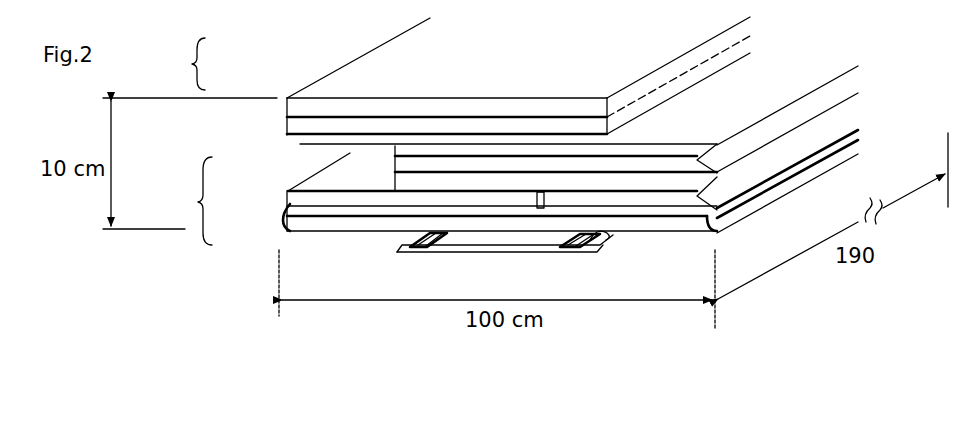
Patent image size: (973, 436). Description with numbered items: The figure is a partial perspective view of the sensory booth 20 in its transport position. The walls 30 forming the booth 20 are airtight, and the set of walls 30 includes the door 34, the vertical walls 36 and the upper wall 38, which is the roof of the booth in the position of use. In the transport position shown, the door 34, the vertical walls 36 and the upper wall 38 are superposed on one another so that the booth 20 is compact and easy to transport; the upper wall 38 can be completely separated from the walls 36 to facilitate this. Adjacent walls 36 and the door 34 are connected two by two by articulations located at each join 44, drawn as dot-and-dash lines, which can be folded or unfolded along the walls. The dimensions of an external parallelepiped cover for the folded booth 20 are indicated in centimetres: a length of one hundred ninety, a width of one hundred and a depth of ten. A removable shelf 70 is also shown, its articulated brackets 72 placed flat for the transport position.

The sensory booth 20 is at (905, 103).
The walls 30 is at (186, 141).
The door 34 is at (289, 203).
The vertical walls 36 is at (295, 108).
The upper wall 38 is at (327, 225).
The join 44 is at (290, 133).
The shelf 70 is at (443, 252).
The articulated brackets 72 is at (448, 238).